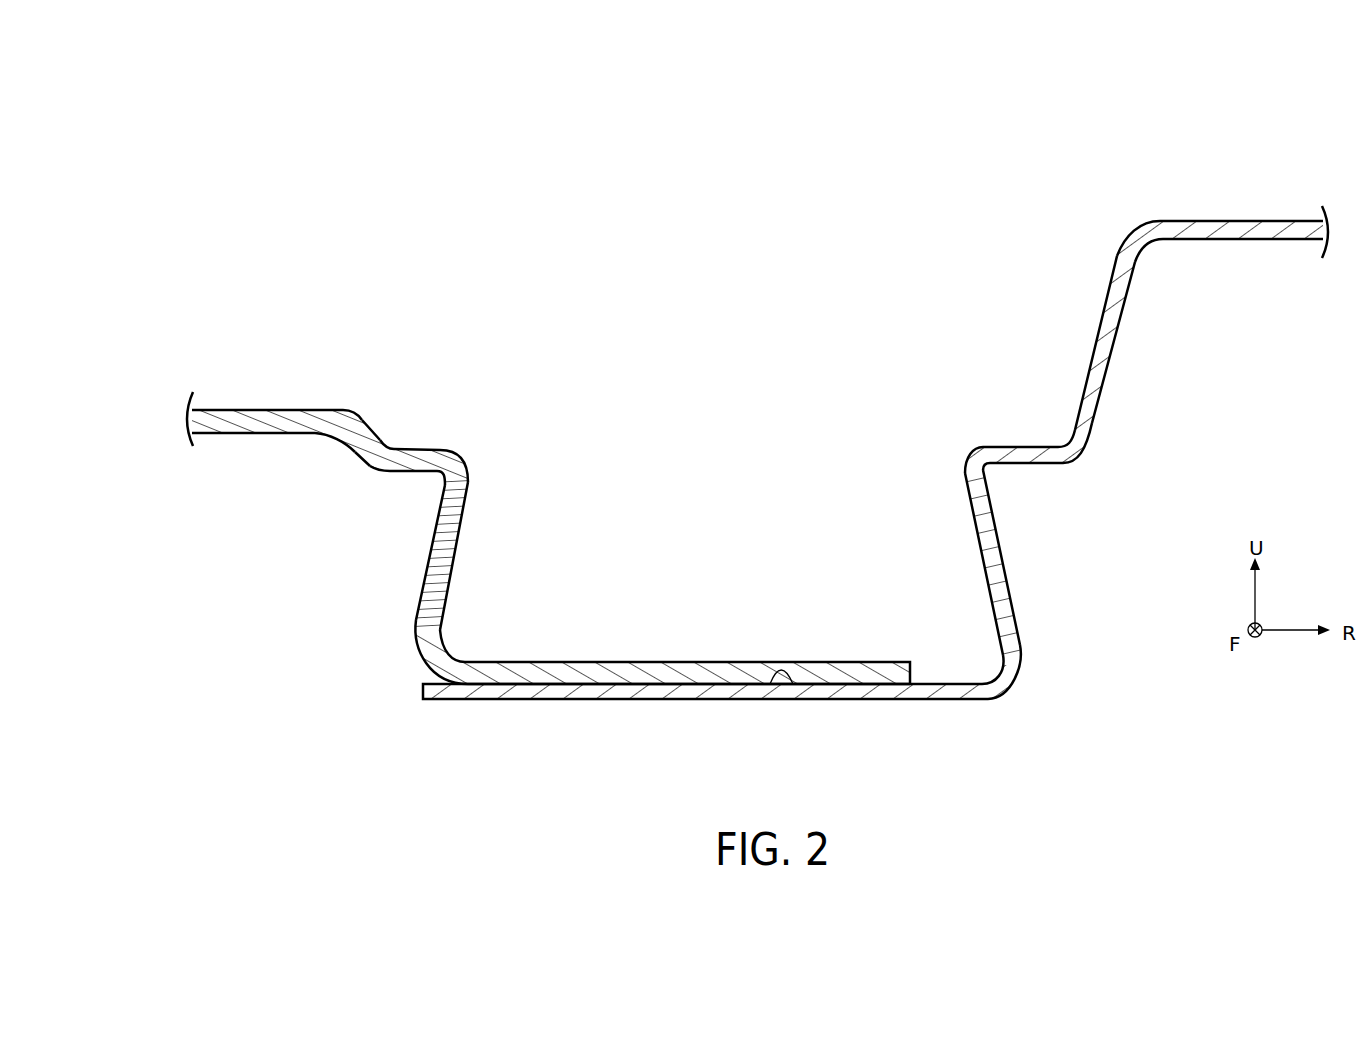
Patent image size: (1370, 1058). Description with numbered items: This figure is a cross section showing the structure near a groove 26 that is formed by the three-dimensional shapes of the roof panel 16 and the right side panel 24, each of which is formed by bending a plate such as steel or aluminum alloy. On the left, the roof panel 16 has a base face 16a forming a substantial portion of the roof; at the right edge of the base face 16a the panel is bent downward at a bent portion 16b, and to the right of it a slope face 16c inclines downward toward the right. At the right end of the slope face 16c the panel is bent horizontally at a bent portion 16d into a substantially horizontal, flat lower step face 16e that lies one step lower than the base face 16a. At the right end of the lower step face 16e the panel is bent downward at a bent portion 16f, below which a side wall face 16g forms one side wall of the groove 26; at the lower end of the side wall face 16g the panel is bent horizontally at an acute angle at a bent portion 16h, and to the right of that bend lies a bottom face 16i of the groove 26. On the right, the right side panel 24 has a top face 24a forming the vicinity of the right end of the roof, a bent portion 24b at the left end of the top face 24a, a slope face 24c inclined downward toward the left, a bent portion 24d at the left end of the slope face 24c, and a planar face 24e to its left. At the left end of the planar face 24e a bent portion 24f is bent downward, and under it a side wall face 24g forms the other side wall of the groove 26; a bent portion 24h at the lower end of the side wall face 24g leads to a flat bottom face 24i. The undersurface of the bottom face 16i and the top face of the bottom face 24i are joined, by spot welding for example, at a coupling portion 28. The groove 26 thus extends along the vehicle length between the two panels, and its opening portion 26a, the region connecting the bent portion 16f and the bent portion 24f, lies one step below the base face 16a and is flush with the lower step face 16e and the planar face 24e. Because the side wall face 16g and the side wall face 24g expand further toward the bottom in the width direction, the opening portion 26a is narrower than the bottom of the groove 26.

The roof panel 16 is at (221, 406).
The base face 16a is at (278, 408).
The bent portion 16b is at (346, 408).
The slope face 16c is at (374, 428).
The bent portion 16d is at (392, 448).
The lower step face 16e is at (415, 448).
The bent portion 16f is at (465, 462).
The side wall face 16g is at (460, 544).
The bent portion 16h is at (457, 660).
The bottom face 16i is at (595, 660).
The right side panel 24 is at (1303, 218).
The top face 24a is at (1254, 221).
The bent portion 24b is at (1140, 252).
The slope face 24c is at (1106, 308).
The bent portion 24d is at (1068, 436).
The planar face 24e is at (1002, 444).
The bent portion 24f is at (963, 465).
The side wall face 24g is at (968, 517).
The bent portion 24h is at (995, 667).
The bottom face 24i is at (943, 680).
The groove 26 is at (729, 605).
The opening portion 26a is at (735, 468).
The coupling portion 28 is at (792, 678).